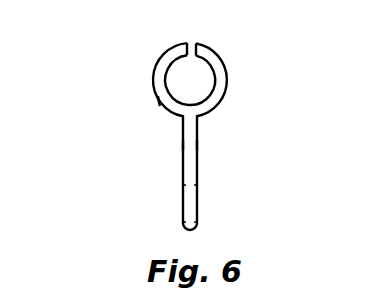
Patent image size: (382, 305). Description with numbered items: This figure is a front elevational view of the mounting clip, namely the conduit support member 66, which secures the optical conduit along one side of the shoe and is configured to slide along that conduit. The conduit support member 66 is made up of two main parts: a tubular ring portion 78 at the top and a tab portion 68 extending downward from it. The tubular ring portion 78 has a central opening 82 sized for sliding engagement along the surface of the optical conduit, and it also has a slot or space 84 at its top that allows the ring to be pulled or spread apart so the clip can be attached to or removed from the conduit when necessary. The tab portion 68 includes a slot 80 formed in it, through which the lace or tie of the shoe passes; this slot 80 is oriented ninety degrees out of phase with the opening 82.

The conduit support member 66 is at (226, 51).
The tab portion 68 is at (198, 143).
The tubular ring portion 78 is at (163, 112).
The slot 80 is at (199, 203).
The opening 82 is at (184, 87).
The slot or space 84 is at (188, 45).